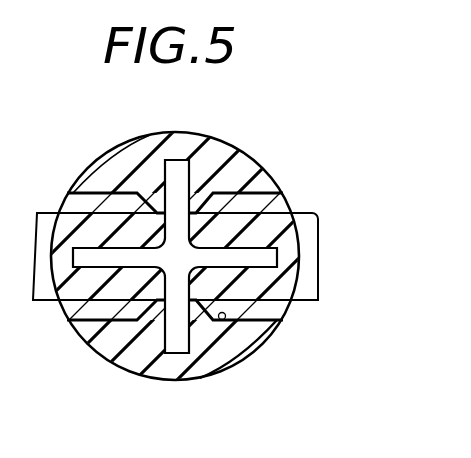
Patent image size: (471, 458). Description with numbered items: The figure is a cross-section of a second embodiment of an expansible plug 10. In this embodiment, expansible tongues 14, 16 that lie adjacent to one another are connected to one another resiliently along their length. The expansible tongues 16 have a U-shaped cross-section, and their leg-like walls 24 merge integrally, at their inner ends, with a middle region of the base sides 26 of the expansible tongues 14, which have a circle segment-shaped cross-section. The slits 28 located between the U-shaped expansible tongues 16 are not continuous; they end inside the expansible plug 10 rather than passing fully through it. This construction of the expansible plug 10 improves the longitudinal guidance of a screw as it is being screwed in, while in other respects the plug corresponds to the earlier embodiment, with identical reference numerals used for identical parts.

The expansible plug 10 is at (271, 366).
The expansible tongues of circle segment-shaped cross-section 14 is at (245, 170).
The expansible tongues of U-shaped cross-section 16 is at (296, 216).
The leg-like walls 24 is at (287, 298).
The base sides 26 is at (218, 317).
The slits 28 is at (130, 308).